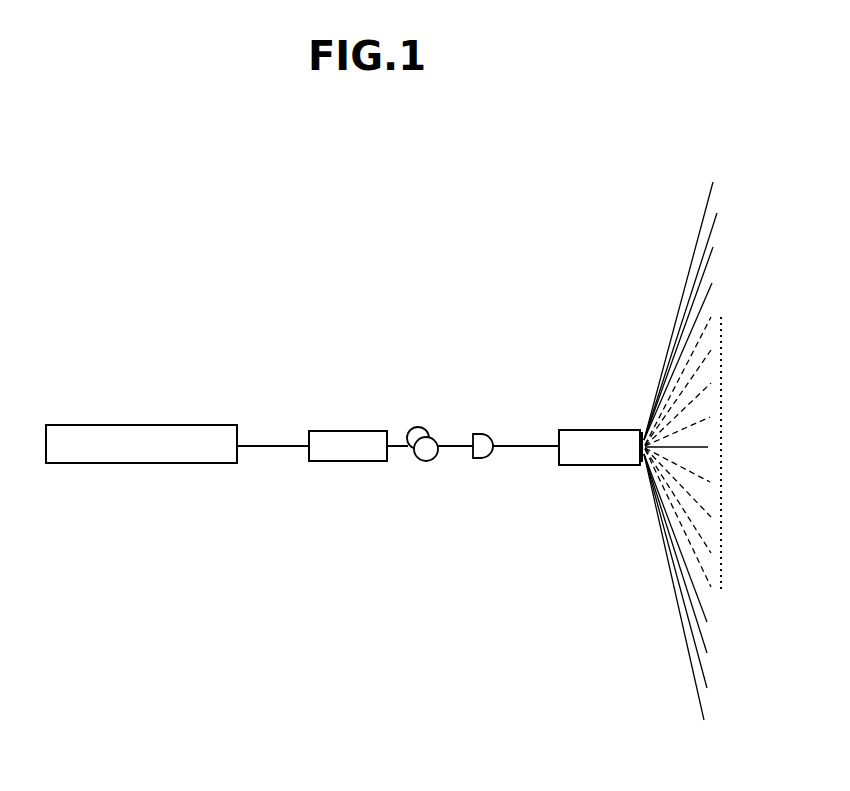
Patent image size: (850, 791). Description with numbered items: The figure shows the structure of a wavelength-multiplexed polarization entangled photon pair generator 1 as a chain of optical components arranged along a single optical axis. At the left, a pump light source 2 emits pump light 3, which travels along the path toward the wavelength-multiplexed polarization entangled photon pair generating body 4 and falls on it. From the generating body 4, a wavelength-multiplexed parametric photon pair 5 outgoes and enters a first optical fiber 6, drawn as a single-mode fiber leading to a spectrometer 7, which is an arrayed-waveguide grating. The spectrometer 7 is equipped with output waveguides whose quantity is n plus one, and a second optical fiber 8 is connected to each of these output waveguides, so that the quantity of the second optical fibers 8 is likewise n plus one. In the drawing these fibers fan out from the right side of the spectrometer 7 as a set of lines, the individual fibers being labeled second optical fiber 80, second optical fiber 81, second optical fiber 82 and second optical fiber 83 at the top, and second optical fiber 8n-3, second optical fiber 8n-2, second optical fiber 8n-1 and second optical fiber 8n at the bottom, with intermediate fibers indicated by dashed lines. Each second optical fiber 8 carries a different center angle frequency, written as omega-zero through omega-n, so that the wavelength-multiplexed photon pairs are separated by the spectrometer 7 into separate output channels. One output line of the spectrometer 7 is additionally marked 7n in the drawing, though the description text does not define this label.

The wavelength-multiplexed polarization entangled photon pair generator 1 is at (342, 334).
The pump light source 2 is at (145, 464).
The pump light 3 is at (290, 448).
The wavelength-multiplexed polarization entangled photon pair generating body 4 is at (348, 431).
The wavelength-multiplexed parametric photon pair 5 is at (453, 445).
The first optical fiber 6 is at (522, 448).
The spectrometer 7 is at (592, 466).
The output port of AWG 7n is at (660, 587).
The second optical fiber 8 is at (696, 306).
The second optical fiber 80 is at (666, 352).
The second optical fiber 81 is at (706, 242).
The second optical fiber 82 is at (706, 268).
The second optical fiber 83 is at (703, 304).
The second optical fiber 8n-3 is at (702, 607).
The second optical fiber 8n-2 is at (702, 640).
The second optical fiber 8n-1 is at (702, 677).
The second optical fiber 8n is at (699, 599).